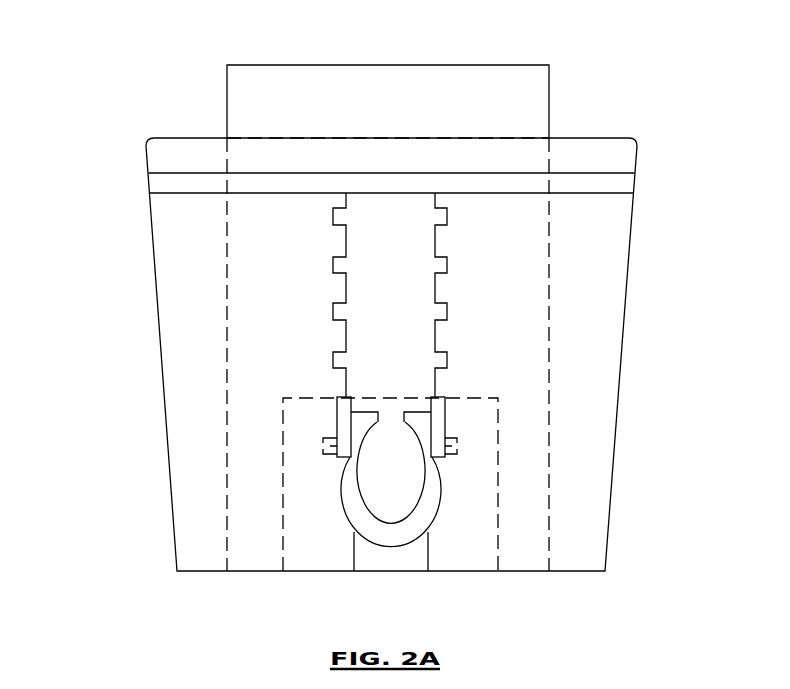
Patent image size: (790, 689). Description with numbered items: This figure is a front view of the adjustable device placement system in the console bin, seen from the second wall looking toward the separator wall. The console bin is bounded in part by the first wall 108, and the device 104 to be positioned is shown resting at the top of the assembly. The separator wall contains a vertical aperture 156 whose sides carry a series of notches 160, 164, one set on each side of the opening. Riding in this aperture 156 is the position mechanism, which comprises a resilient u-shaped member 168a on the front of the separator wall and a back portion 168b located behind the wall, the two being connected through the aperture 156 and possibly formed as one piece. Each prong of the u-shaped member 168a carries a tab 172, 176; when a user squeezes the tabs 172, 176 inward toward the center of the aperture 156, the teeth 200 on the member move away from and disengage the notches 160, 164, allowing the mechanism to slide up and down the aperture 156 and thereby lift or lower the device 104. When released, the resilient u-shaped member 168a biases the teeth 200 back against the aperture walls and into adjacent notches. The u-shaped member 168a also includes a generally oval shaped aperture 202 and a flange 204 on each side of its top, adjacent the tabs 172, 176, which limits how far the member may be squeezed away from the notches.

The device 104 is at (267, 65).
The first wall 108 is at (165, 138).
The aperture 156 is at (376, 295).
The notch 160 is at (333, 358).
The notch 164 is at (448, 312).
The u-shaped member 168a is at (400, 533).
The back portion 168b is at (500, 454).
The tab 172 is at (340, 457).
The tab 176 is at (441, 458).
The teeth 200 is at (323, 447).
The oval shaped aperture 202 is at (390, 463).
The flange 204 is at (378, 417).